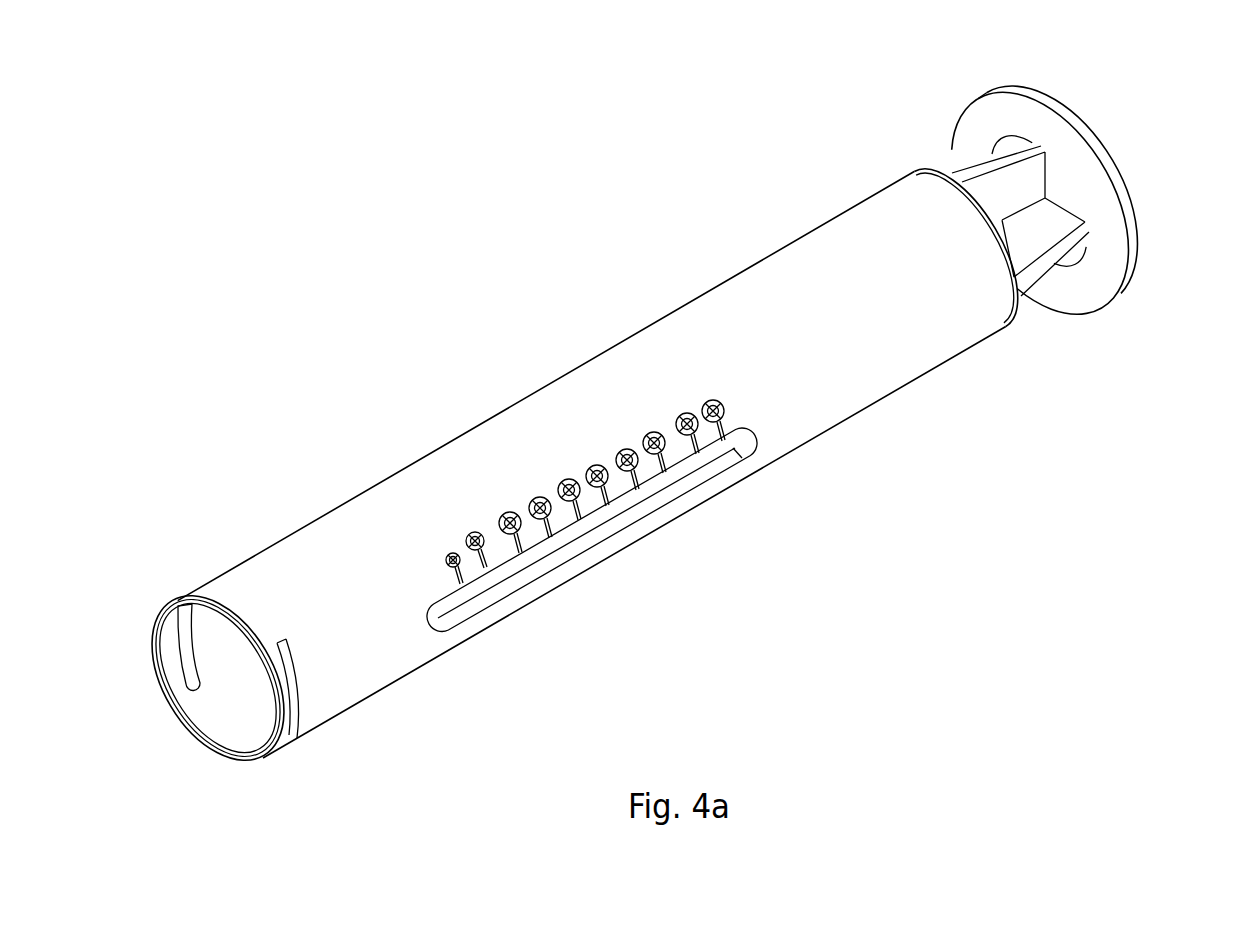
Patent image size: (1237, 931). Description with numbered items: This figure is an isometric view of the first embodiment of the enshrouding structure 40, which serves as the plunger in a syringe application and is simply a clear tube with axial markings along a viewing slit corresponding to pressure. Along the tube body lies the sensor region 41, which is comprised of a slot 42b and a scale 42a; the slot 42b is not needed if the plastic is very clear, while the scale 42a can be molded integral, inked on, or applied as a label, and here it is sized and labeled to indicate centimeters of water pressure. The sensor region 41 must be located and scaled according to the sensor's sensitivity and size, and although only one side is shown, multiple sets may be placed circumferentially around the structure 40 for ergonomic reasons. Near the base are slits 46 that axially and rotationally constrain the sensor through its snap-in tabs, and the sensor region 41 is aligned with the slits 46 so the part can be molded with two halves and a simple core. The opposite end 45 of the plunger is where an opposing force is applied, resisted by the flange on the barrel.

The enshrouding structure 40 is at (462, 470).
The sensor region 41 is at (744, 492).
The scale 42a is at (570, 457).
The slot 42b is at (667, 497).
The end 45 is at (1112, 257).
The slits 46 is at (168, 662).